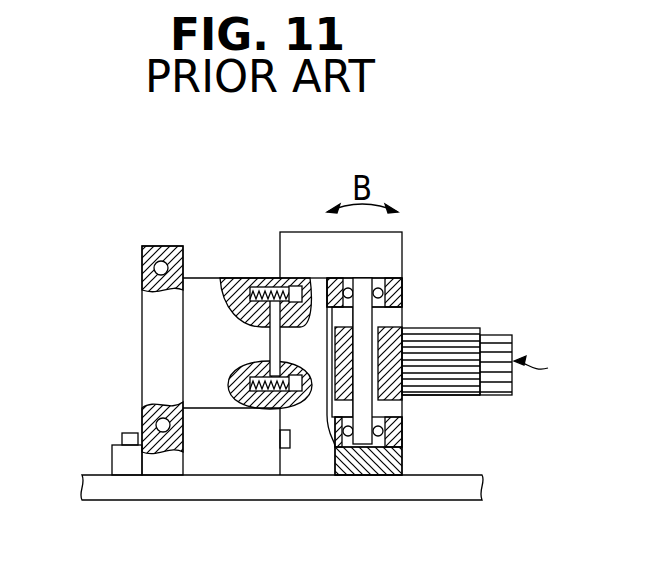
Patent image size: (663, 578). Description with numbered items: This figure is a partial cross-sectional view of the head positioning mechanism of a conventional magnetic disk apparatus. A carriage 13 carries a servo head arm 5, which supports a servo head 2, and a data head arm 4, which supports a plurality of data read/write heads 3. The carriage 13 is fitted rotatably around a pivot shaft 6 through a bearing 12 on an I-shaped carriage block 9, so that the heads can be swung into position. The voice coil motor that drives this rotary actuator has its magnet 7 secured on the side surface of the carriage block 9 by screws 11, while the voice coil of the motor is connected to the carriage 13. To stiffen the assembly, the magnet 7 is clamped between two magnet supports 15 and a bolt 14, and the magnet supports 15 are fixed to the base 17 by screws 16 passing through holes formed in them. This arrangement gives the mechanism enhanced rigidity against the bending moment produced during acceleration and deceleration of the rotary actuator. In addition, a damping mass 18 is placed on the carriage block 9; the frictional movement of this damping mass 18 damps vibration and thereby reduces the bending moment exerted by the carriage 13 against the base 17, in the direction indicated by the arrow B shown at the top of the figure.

The servo head 2 is at (505, 334).
The data read/write heads 3 is at (543, 368).
The data head arm 4 is at (471, 397).
The servo head arm 5 is at (479, 330).
The pivot shaft 6 is at (363, 282).
The magnet 7 is at (204, 285).
The carriage block 9 is at (330, 475).
The screws 11 is at (296, 290).
The bearing 12 is at (390, 300).
The carriage 13 is at (386, 327).
The bolt 14 is at (154, 268).
The magnet supports 15 is at (118, 460).
The screws 16 is at (121, 435).
The base 17 is at (162, 500).
The damping mass 18 is at (296, 232).